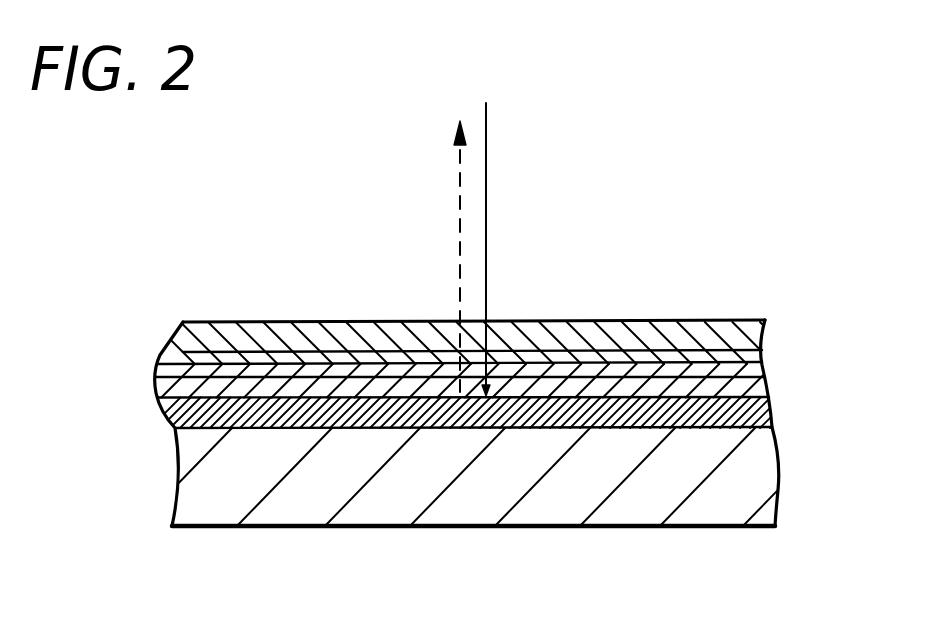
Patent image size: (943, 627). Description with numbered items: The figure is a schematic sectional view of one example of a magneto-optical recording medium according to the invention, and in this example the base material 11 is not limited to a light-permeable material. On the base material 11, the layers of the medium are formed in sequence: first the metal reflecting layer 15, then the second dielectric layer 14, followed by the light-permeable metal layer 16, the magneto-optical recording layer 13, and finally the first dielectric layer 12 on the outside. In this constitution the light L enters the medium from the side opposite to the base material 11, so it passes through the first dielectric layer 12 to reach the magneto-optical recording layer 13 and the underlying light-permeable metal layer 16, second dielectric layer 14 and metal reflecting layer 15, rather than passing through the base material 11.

The base material 11 is at (762, 463).
The first dielectric layer 12 is at (750, 333).
The magneto-optical recording layer 13 is at (748, 357).
The second dielectric layer 14 is at (745, 386).
The metal reflecting layer 15 is at (757, 413).
The light-permeable metal layer 16 is at (753, 370).
The light L is at (486, 187).